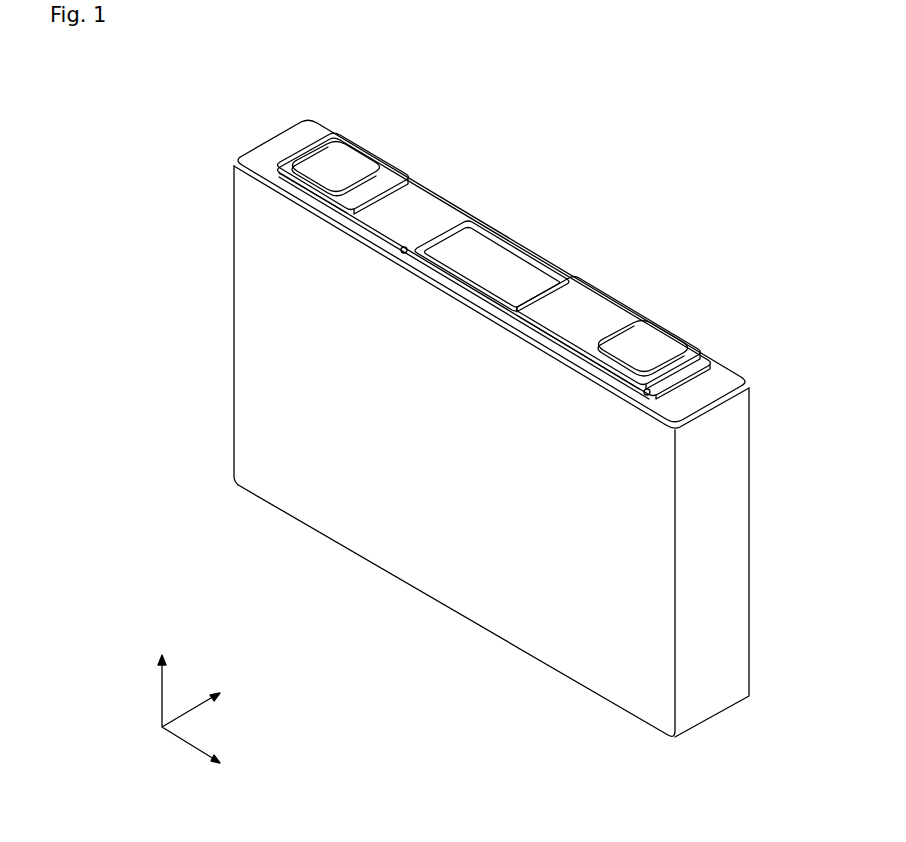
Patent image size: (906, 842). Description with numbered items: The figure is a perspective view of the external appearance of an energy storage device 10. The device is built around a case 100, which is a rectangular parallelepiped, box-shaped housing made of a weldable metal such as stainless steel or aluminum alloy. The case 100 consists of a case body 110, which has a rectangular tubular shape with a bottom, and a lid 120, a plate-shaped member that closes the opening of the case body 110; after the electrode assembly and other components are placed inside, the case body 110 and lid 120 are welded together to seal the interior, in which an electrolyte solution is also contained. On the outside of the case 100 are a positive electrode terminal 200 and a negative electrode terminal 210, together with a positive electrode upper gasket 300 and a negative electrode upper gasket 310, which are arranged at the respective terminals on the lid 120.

The energy storage device 10 is at (647, 125).
The case 100 is at (125, 155).
The case body 110 is at (255, 267).
The lid 120 is at (268, 156).
The positive electrode terminal 200 is at (348, 162).
The negative electrode terminal 210 is at (662, 337).
The positive electrode upper gasket 300 is at (396, 180).
The negative electrode upper gasket 310 is at (628, 315).